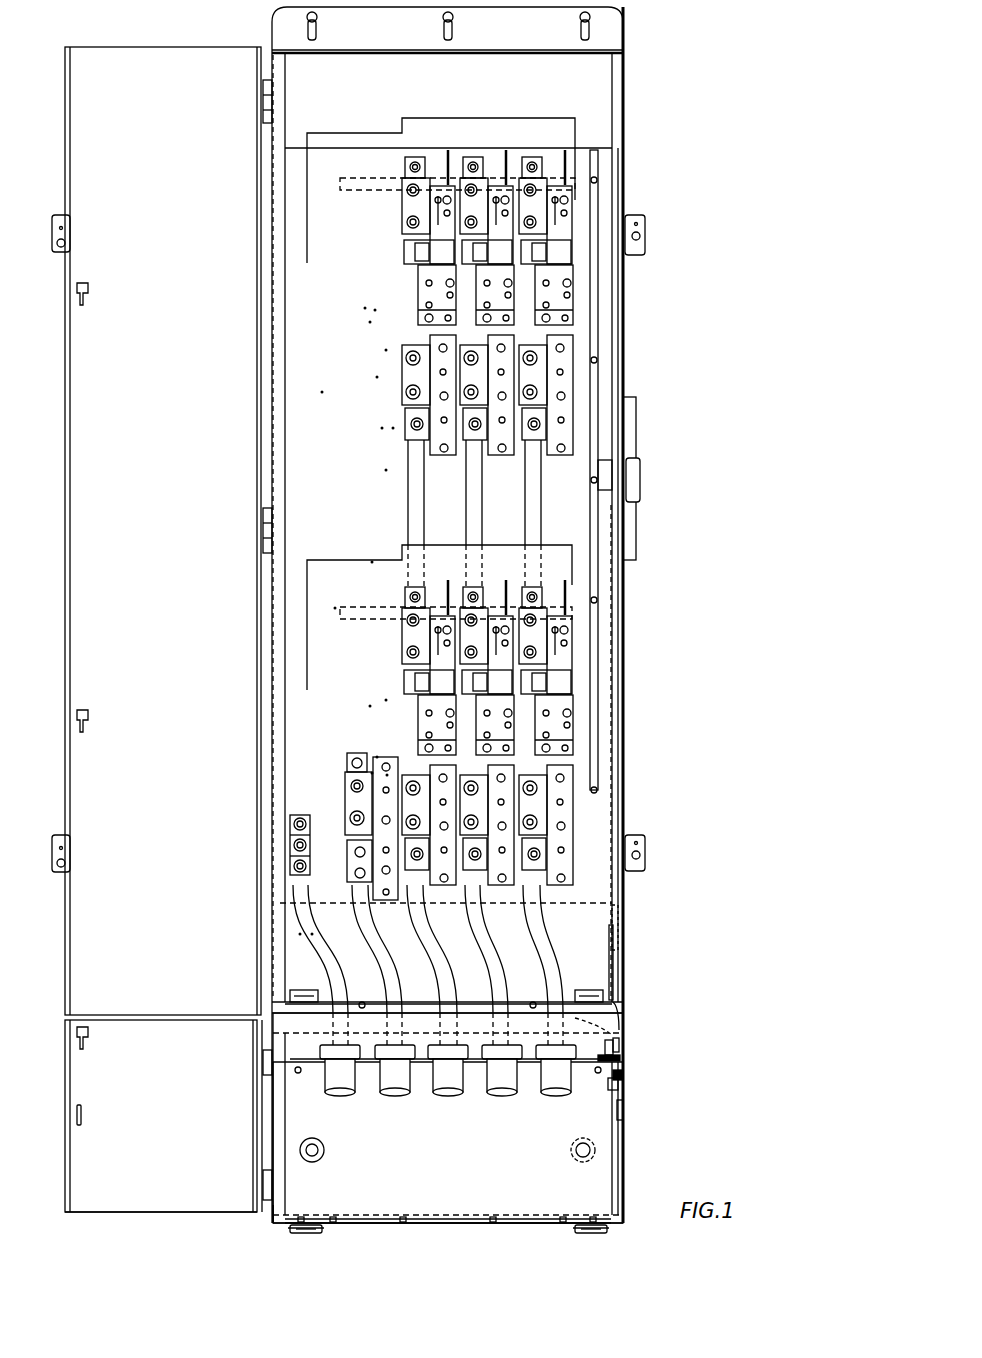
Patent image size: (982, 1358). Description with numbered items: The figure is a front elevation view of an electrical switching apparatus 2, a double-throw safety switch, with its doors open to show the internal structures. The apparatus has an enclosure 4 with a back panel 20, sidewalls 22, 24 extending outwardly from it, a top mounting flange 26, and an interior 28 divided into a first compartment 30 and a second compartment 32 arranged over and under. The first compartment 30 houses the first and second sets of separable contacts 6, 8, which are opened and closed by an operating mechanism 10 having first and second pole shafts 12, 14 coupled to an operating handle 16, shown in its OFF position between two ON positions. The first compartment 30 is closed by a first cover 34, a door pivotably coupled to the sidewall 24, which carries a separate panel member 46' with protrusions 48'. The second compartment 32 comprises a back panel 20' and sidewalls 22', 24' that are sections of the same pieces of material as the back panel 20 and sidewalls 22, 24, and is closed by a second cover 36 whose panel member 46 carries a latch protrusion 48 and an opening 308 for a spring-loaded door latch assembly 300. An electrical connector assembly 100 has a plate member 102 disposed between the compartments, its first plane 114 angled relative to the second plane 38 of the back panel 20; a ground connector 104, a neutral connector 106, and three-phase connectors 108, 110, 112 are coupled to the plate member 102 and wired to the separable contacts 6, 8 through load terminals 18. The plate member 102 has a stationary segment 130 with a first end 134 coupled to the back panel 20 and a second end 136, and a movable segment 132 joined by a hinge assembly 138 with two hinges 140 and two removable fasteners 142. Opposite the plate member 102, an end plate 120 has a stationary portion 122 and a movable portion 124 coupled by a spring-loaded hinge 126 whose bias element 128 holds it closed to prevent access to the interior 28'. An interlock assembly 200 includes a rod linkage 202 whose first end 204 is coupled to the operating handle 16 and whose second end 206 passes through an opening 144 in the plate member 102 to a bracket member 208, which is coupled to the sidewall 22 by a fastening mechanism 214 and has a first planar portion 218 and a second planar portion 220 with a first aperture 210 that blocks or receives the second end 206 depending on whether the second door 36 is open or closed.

The electrical switching apparatus 2 is at (184, 1256).
The enclosure 4 is at (262, 40).
The first set of separable contacts 6 is at (396, 294).
The second set of separable contacts 8 is at (384, 706).
The operating mechanism 10 is at (648, 566).
The first pole shaft 12 is at (405, 243).
The second pole shaft 14 is at (405, 680).
The operating handle 16 is at (636, 465).
The load terminals 18 is at (408, 900).
The back panel 20 is at (476, 527).
The sidewall 22 is at (650, 615).
The sidewall 24 is at (297, 636).
The top mounting flange 26 is at (488, 50).
The interior 28 is at (306, 621).
The first compartment 30 is at (320, 535).
The second compartment 32 is at (402, 1195).
The first cover 34 is at (65, 487).
The second cover 36 is at (65, 1075).
The second plane 38 is at (312, 966).
The panel member 46 is at (104, 1115).
The panel member 46' is at (130, 530).
The protrusion 48 is at (104, 1041).
The protrusions 48' is at (112, 495).
The electrical connector assembly 100 is at (287, 1102).
The plate member 102 is at (280, 1048).
The ground connector 104 is at (340, 1080).
The neutral connector 106 is at (395, 1080).
The three-phase connector 108 is at (448, 1080).
The three-phase connector 110 is at (500, 1080).
The three-phase connector 112 is at (553, 1080).
The first plane 114 is at (322, 1054).
The end plate 120 is at (513, 1226).
The stationary portion 122 is at (280, 1205).
The movable portion 124 is at (462, 1225).
The spring-loaded hinge 126 is at (293, 1230).
The bias element 128 is at (312, 1235).
The stationary segment 130 is at (596, 1045).
The movable segment 132 is at (466, 1012).
The first end 134 is at (282, 1077).
The second end 136 is at (616, 1000).
The hinge assembly 138 is at (612, 975).
The hinges 140 is at (300, 993).
The removable fastener 142 is at (362, 1002).
The opening 144 is at (575, 1018).
The interlock assembly 200 is at (537, 1136).
The linkage 202 is at (615, 925).
The first end 204 is at (606, 527).
The second end 206 is at (625, 1025).
The bracket member 208 is at (636, 1078).
The first aperture 210 is at (607, 1058).
The fastening mechanism 214 is at (606, 1115).
The first planar portion 218 is at (633, 1085).
The second planar portion 220 is at (575, 1062).
The spring-loaded door latch assembly 300 is at (577, 1158).
The opening 308 is at (82, 1125).
The sidewall 24' is at (297, 1116).
The interior 28' is at (266, 1164).
The sidewall 22' is at (650, 1138).
The back panel 20' is at (650, 1138).